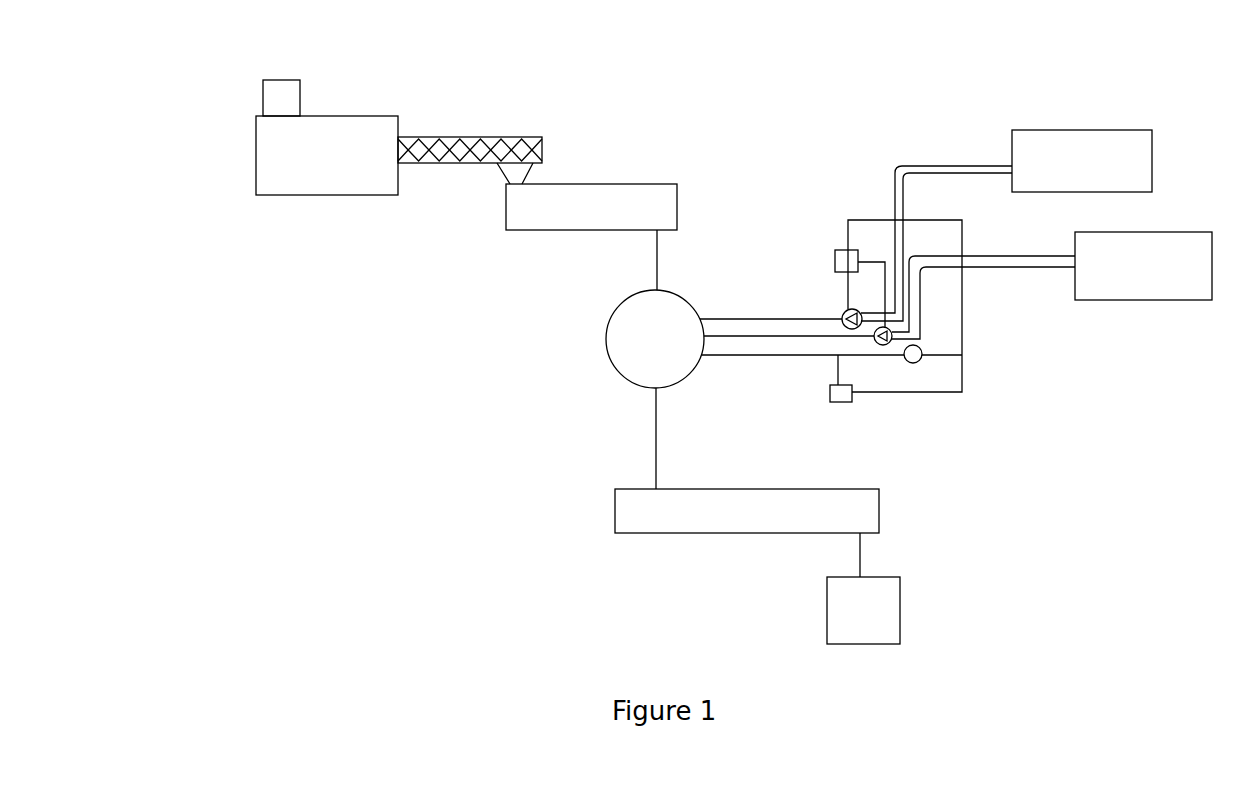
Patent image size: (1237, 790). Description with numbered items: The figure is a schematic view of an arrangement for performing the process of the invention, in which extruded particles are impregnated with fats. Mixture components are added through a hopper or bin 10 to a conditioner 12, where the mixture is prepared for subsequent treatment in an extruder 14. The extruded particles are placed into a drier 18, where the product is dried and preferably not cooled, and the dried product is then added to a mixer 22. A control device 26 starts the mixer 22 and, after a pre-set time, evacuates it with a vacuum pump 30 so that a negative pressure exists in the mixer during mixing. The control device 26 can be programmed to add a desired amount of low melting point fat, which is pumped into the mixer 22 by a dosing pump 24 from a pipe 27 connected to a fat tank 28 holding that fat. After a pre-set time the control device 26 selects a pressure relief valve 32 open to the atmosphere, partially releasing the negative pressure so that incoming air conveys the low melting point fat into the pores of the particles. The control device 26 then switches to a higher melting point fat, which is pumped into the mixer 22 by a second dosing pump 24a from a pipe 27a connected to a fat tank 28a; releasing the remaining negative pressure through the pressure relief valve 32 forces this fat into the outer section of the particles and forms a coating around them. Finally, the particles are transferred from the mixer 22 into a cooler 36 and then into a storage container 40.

The hopper or bin 10 is at (318, 97).
The conditioner 12 is at (247, 167).
The extruder 14 is at (467, 137).
The drier 18 is at (590, 182).
The mixer 22 is at (612, 381).
The dosing pump 24 is at (845, 307).
The dosing pump 24a is at (875, 343).
The control device 26 is at (833, 260).
The pipe 27 is at (958, 165).
The pipe 27a is at (980, 252).
The fat tank 28 is at (1124, 130).
The fat tank 28a is at (1146, 303).
The vacuum pump 30 is at (922, 348).
The pressure relief valve 32 is at (838, 404).
The cooler 36 is at (737, 535).
The storage container 40 is at (905, 614).